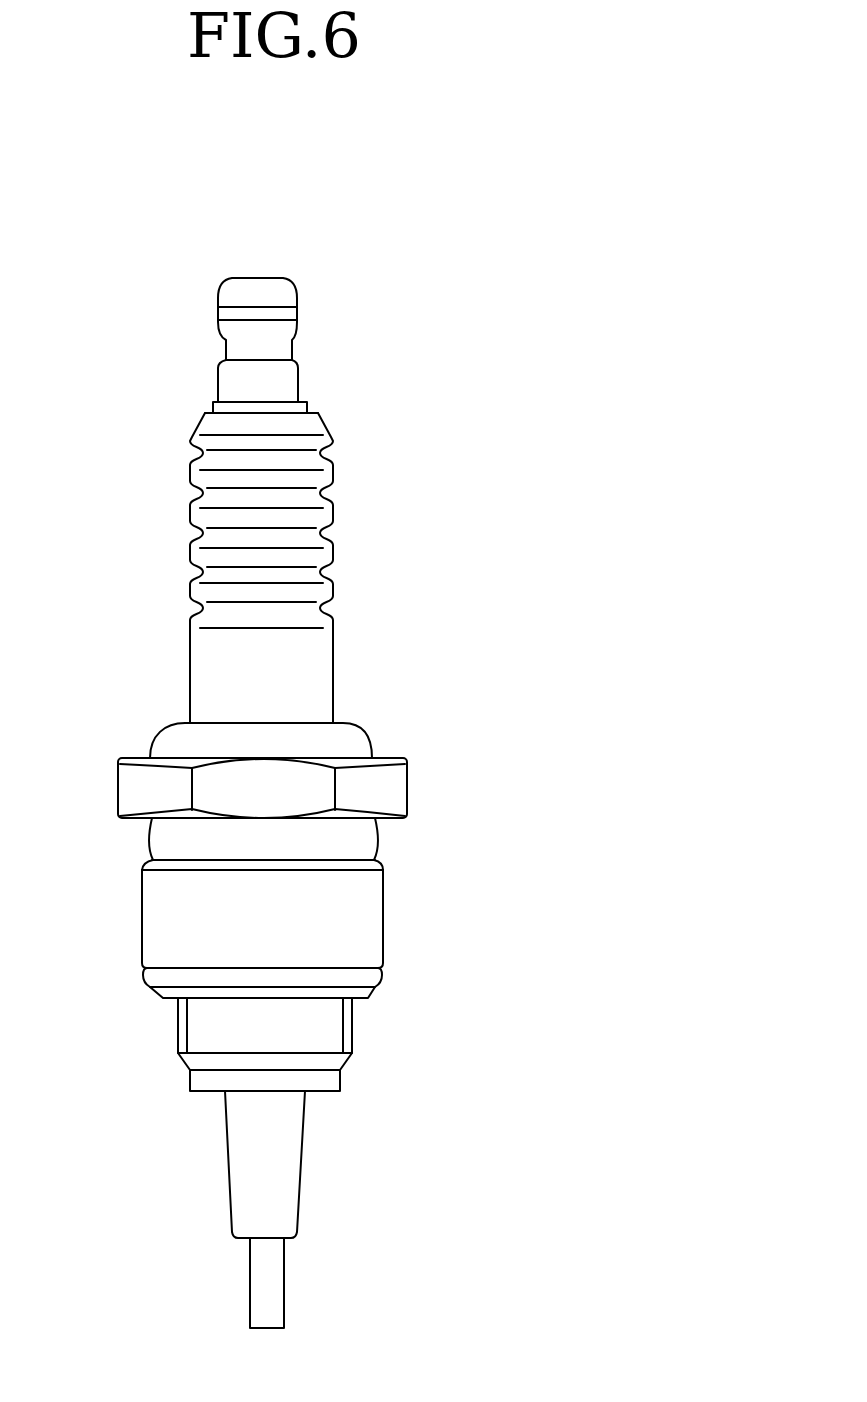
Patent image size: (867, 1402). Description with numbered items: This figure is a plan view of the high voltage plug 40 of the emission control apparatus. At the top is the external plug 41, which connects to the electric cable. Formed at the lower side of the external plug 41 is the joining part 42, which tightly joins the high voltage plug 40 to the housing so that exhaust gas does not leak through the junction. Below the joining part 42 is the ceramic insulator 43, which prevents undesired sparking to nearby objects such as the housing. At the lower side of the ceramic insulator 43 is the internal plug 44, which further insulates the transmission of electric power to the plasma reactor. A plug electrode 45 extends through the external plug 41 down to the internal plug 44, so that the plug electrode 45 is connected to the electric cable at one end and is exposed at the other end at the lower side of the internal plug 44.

The high voltage plug 40 is at (120, 361).
The external plug 41 is at (325, 408).
The joining part 42 is at (404, 753).
The ceramic insulator 43 is at (350, 1080).
The internal plug 44 is at (310, 1187).
The plug electrode 45 is at (280, 278).